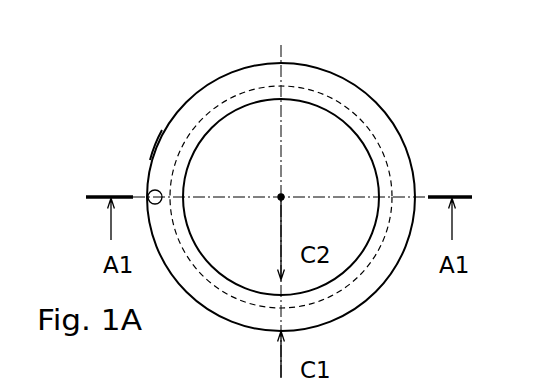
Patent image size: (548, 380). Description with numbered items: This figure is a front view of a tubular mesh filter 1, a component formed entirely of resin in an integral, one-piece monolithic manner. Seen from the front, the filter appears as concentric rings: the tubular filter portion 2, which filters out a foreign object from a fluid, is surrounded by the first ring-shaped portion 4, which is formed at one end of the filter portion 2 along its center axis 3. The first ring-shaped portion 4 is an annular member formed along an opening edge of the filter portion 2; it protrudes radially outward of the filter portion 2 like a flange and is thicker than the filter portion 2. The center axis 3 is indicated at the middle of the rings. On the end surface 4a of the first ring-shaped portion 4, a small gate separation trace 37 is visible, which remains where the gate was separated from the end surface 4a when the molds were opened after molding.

The tubular mesh filter 1 is at (370, 69).
The filter portion 2 is at (383, 141).
The center axis 3 is at (279, 195).
The first ring-shaped portion 4 is at (182, 89).
The end surface 4a is at (170, 142).
The gate separation trace 37 is at (151, 191).